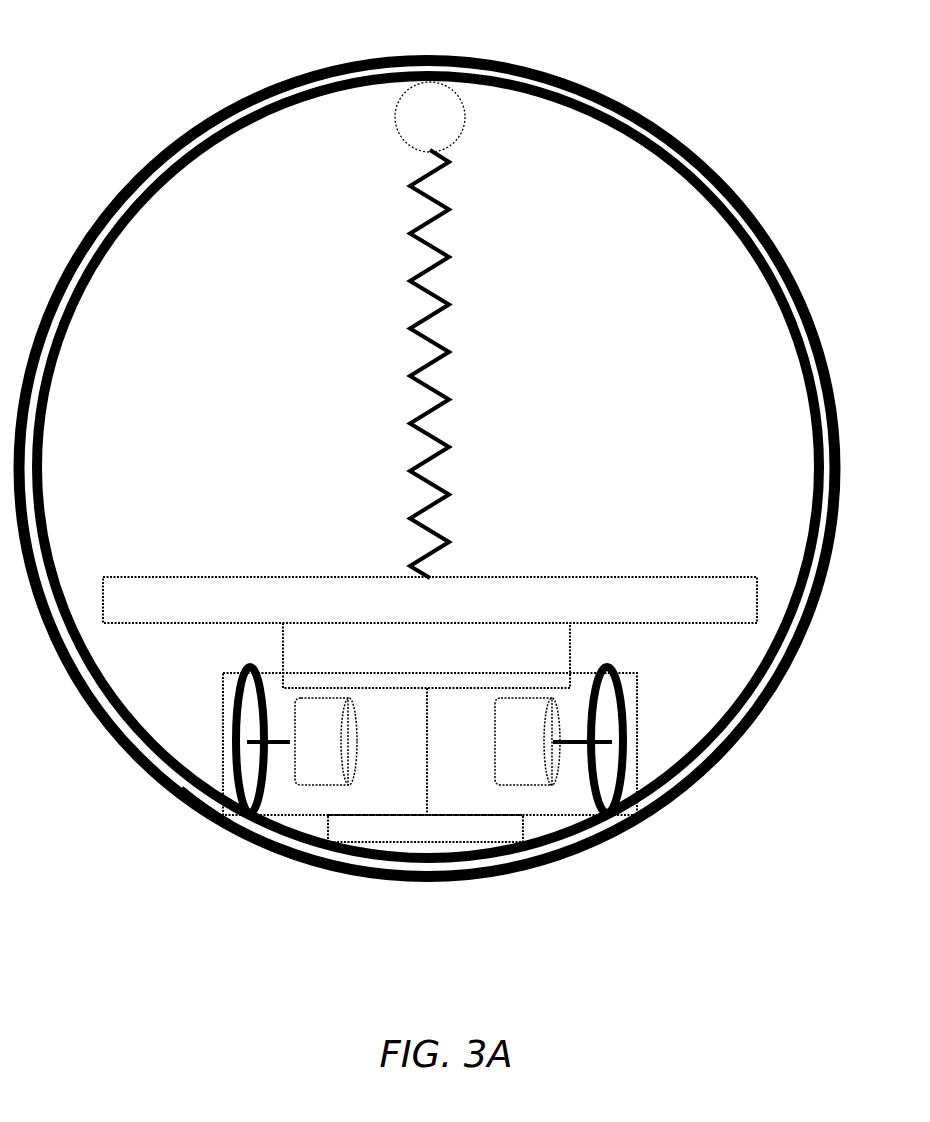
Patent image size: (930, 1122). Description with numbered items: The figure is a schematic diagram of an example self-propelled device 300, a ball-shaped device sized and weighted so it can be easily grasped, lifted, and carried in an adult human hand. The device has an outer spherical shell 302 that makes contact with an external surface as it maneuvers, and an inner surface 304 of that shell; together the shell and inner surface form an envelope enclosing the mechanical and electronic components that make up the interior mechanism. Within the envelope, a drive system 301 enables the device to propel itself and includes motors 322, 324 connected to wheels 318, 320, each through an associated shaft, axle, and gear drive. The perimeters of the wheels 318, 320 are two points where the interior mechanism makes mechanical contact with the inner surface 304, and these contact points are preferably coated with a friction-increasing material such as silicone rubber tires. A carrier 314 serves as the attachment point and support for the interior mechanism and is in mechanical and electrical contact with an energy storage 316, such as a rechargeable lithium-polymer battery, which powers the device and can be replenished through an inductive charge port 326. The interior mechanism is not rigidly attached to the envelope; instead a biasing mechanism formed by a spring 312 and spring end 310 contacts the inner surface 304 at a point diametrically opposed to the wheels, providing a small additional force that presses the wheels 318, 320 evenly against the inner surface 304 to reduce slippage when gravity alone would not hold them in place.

The self-propelled device 300 is at (138, 80).
The drive system 301 is at (227, 780).
The outer spherical shell 302 is at (730, 170).
The inner surface 304 is at (715, 213).
The spring end 310 is at (413, 128).
The spring 312 is at (410, 292).
The carrier 314 is at (393, 608).
The energy storage 316 is at (395, 651).
The wheel 318 is at (252, 723).
The wheel 320 is at (643, 743).
The motor 322 is at (301, 753).
The motor 324 is at (503, 754).
The inductive charge port 326 is at (455, 848).